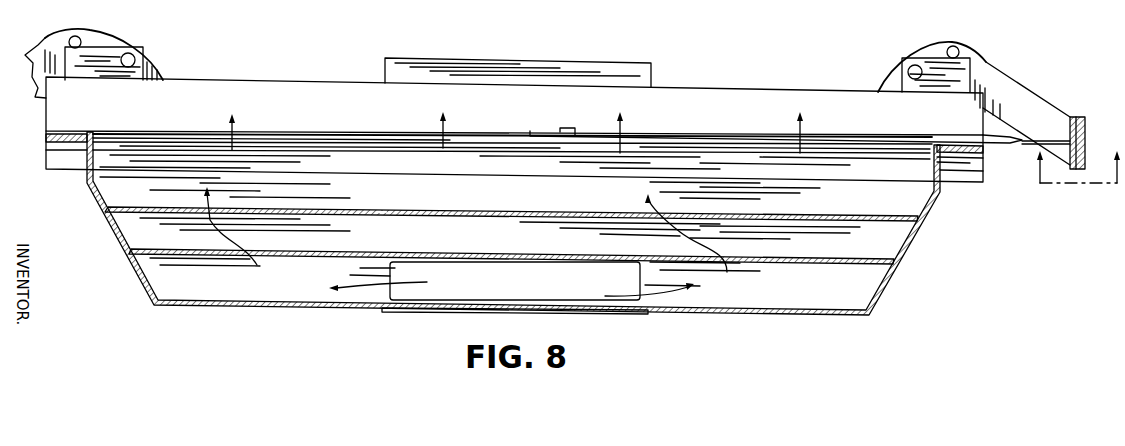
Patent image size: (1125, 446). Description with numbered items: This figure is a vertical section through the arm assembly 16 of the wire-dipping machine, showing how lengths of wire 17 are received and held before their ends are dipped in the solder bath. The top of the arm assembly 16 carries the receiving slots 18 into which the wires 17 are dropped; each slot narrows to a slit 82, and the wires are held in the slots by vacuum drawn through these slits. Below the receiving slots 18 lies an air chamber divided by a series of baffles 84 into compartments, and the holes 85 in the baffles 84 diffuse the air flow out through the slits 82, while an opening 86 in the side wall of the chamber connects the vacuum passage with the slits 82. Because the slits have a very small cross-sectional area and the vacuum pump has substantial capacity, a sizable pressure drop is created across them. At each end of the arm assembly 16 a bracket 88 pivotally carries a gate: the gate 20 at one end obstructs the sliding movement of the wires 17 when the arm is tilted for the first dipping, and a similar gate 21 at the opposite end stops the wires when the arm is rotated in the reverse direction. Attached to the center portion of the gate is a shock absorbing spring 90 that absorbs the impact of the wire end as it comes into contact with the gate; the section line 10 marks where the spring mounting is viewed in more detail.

The section line 10- 10 is at (1075, 176).
The arm assembly 16 is at (732, 80).
The wire 17 is at (1007, 140).
The receiving slot 18 is at (177, 107).
The gate 20 is at (60, 27).
The gate 21 is at (997, 82).
The slit 82 is at (383, 135).
The baffle 84 is at (557, 210).
The hole 85 is at (380, 209).
The opening 86 is at (457, 294).
The bracket 88 is at (103, 55).
The shock absorbing spring 90 is at (1068, 125).